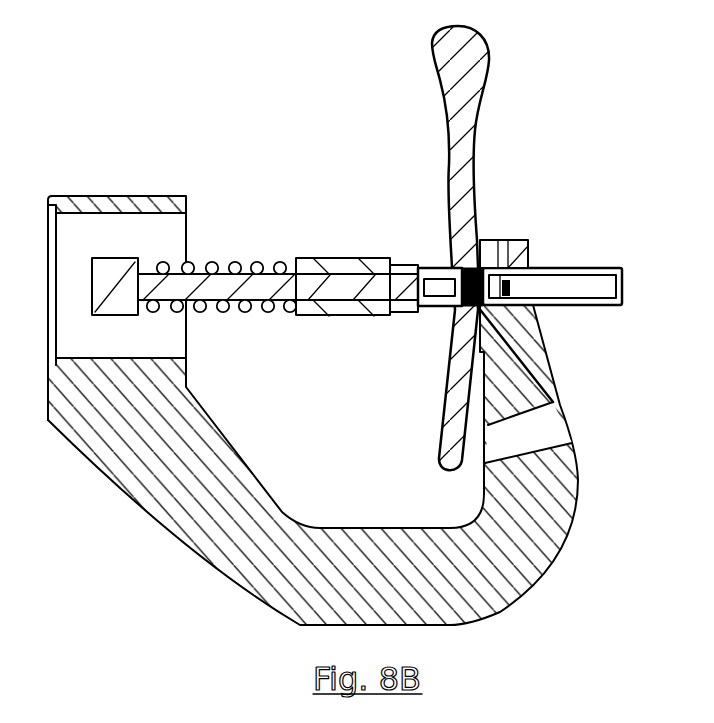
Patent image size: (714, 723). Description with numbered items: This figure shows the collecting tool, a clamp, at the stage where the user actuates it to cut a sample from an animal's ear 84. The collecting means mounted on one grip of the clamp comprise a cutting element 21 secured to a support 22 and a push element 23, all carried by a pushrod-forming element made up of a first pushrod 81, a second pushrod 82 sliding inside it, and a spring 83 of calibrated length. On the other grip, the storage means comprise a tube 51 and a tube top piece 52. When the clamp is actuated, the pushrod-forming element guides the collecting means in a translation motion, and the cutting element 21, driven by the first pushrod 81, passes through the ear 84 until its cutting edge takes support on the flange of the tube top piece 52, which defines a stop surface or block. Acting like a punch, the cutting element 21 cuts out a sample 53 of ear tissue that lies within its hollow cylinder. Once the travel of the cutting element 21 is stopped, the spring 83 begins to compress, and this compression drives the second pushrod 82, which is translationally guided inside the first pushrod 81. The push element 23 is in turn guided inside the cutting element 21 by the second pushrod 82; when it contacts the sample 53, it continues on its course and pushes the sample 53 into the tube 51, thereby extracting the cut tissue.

The ear 84 is at (483, 70).
The spring 83 is at (237, 262).
The second pushrod 82 is at (218, 290).
The first pushrod 81 is at (335, 258).
The push element 23 is at (430, 278).
The cutting element 21 is at (466, 285).
The support 22 is at (400, 300).
The tube top piece 52 is at (497, 288).
The tube 51 is at (571, 288).
The sample 53 is at (490, 318).